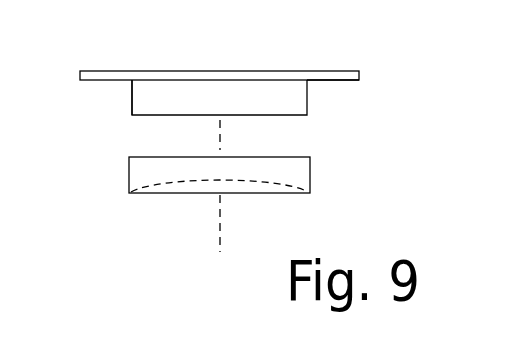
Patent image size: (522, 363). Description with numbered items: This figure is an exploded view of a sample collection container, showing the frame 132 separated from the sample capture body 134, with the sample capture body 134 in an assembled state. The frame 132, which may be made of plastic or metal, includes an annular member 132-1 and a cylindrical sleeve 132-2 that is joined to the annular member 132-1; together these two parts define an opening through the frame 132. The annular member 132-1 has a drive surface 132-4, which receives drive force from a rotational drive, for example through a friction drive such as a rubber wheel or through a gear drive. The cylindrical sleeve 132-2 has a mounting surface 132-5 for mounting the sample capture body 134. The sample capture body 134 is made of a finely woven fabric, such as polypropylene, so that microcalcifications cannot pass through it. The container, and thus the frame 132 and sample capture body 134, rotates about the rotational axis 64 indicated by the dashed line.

The frame 132 is at (239, 81).
The annular member 132-1 is at (337, 80).
The cylindrical sleeve 132-2 is at (328, 105).
The drive surface 132-4 is at (108, 70).
The mounting surface 132-5 is at (132, 97).
The sample capture body 134 is at (334, 178).
The rotational axis 64 is at (219, 224).